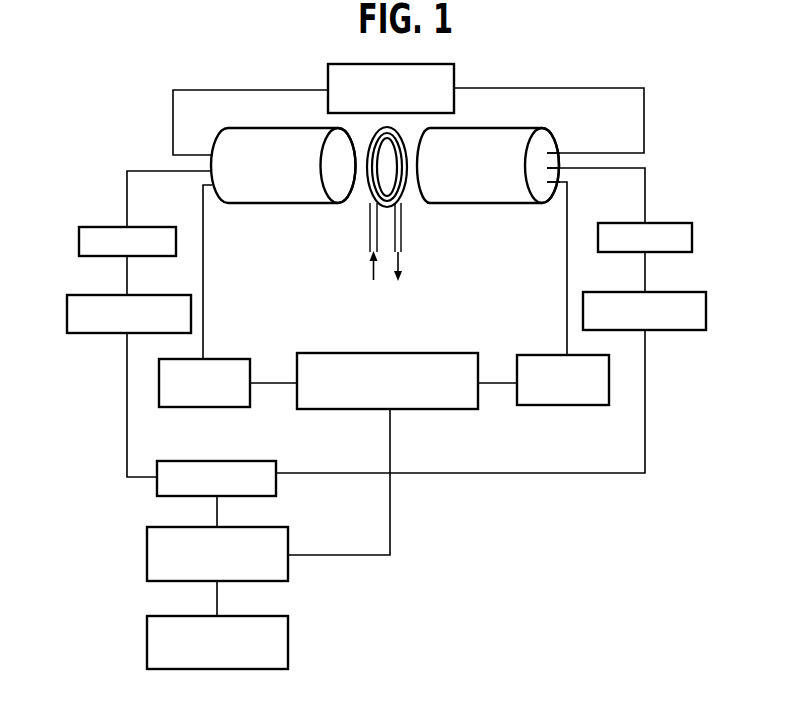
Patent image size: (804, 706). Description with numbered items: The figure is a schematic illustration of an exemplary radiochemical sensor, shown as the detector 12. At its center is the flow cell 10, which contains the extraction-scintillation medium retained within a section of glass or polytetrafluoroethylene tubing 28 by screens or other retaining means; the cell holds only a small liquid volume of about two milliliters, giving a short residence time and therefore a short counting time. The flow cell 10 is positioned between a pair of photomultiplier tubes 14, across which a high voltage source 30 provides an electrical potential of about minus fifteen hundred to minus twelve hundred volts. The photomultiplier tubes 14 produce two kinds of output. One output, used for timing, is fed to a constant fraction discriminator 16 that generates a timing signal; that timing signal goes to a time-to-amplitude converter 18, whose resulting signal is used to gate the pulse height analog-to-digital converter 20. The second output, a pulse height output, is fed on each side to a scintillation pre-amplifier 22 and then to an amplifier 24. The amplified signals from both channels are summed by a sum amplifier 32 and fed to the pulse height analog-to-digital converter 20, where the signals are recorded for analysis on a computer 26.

The flow cell 10 is at (356, 214).
The detector 12 is at (678, 127).
The photomultiplier tubes 14 is at (258, 205).
The constant fraction discriminator 16 is at (238, 358).
The time-to-amplitude converter 18 is at (370, 353).
The pulse height analog-to-digital converter 20 is at (147, 556).
The scintillation pre-amplifier 22 is at (79, 237).
The amplifier 24 is at (67, 316).
The computer 26 is at (147, 644).
The tubing 28 is at (401, 200).
The high voltage source 30 is at (455, 75).
The sum amplifier 32 is at (243, 461).